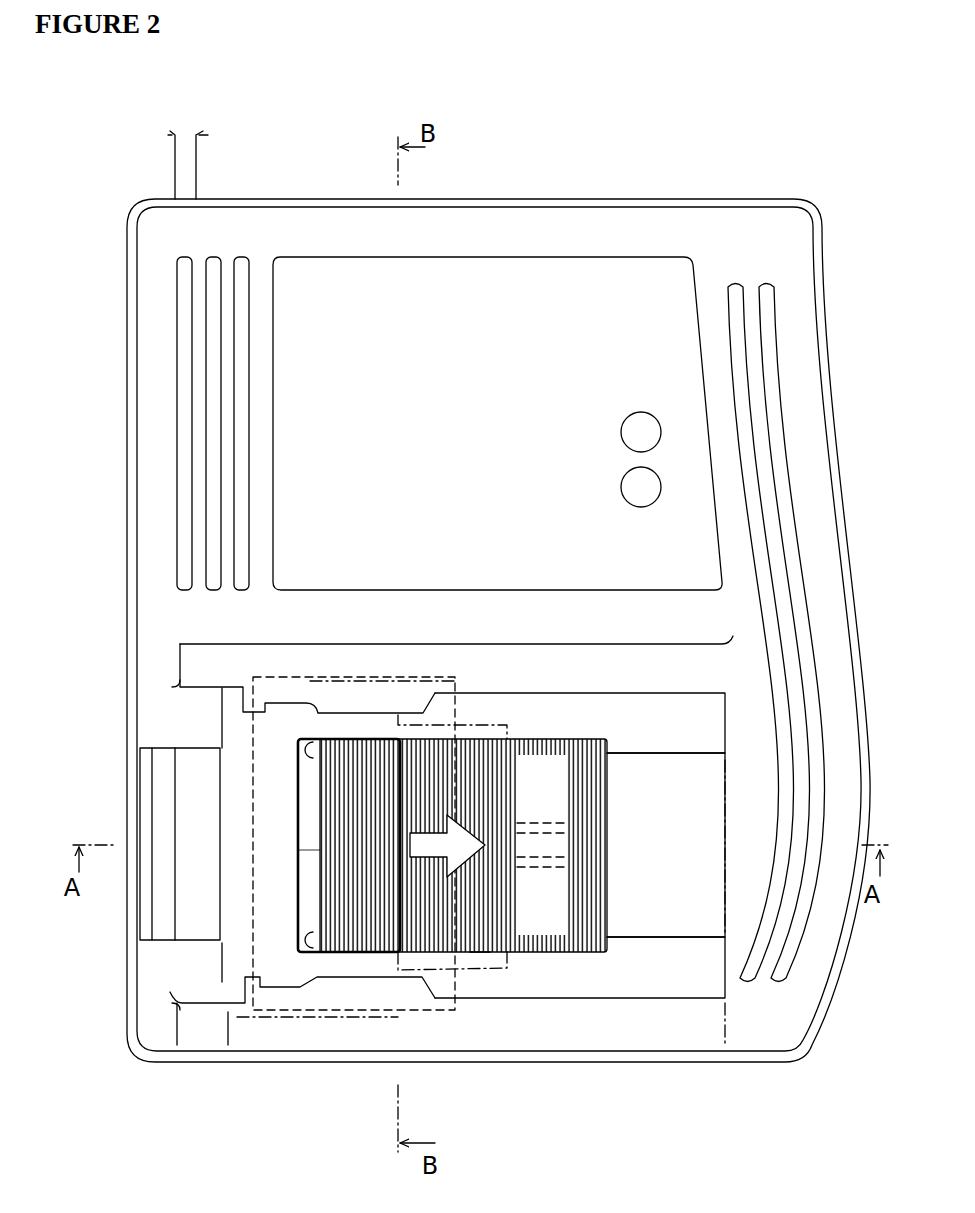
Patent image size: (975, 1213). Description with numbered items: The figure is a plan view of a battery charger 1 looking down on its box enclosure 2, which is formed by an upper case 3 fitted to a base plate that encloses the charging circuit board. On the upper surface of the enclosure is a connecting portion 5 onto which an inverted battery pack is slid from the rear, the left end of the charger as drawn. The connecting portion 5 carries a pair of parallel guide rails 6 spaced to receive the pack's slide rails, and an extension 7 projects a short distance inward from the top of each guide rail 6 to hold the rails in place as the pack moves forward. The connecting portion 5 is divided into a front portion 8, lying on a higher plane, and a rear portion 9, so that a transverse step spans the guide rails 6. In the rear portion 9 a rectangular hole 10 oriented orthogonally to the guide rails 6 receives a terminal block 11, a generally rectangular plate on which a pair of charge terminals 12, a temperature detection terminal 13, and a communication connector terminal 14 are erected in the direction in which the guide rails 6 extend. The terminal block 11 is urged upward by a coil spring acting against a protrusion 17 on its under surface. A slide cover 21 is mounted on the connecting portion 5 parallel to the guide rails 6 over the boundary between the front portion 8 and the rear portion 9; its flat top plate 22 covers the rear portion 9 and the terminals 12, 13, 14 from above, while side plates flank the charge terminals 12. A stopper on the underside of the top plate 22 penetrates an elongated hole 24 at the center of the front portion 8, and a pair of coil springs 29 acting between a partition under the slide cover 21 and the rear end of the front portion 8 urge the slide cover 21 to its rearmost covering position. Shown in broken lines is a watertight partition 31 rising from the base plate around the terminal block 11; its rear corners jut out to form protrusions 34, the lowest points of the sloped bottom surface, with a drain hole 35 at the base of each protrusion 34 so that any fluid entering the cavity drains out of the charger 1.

The battery charger 1 is at (485, 170).
The box enclosure 2 is at (826, 236).
The upper case 3 is at (718, 225).
The connecting portion 5 is at (278, 833).
The guide rails 6 is at (498, 657).
The extension 7 is at (340, 705).
The front portion 8 is at (620, 829).
The rear portion 9 is at (268, 787).
The rectangular hole 10 is at (297, 935).
The terminal block 11 is at (293, 897).
The charge terminals 12 is at (322, 742).
The temperature detection terminal 13 is at (305, 785).
The communication connector terminal 14 is at (390, 1005).
The protrusion 17 is at (300, 850).
The slide cover 21 is at (542, 955).
The top plate 22 is at (479, 952).
The elongated hole 24 is at (547, 852).
The coil springs 29 is at (468, 740).
The watertight partition 31 is at (287, 955).
The protrusions 34 is at (180, 686).
The drain hole 35 is at (203, 648).